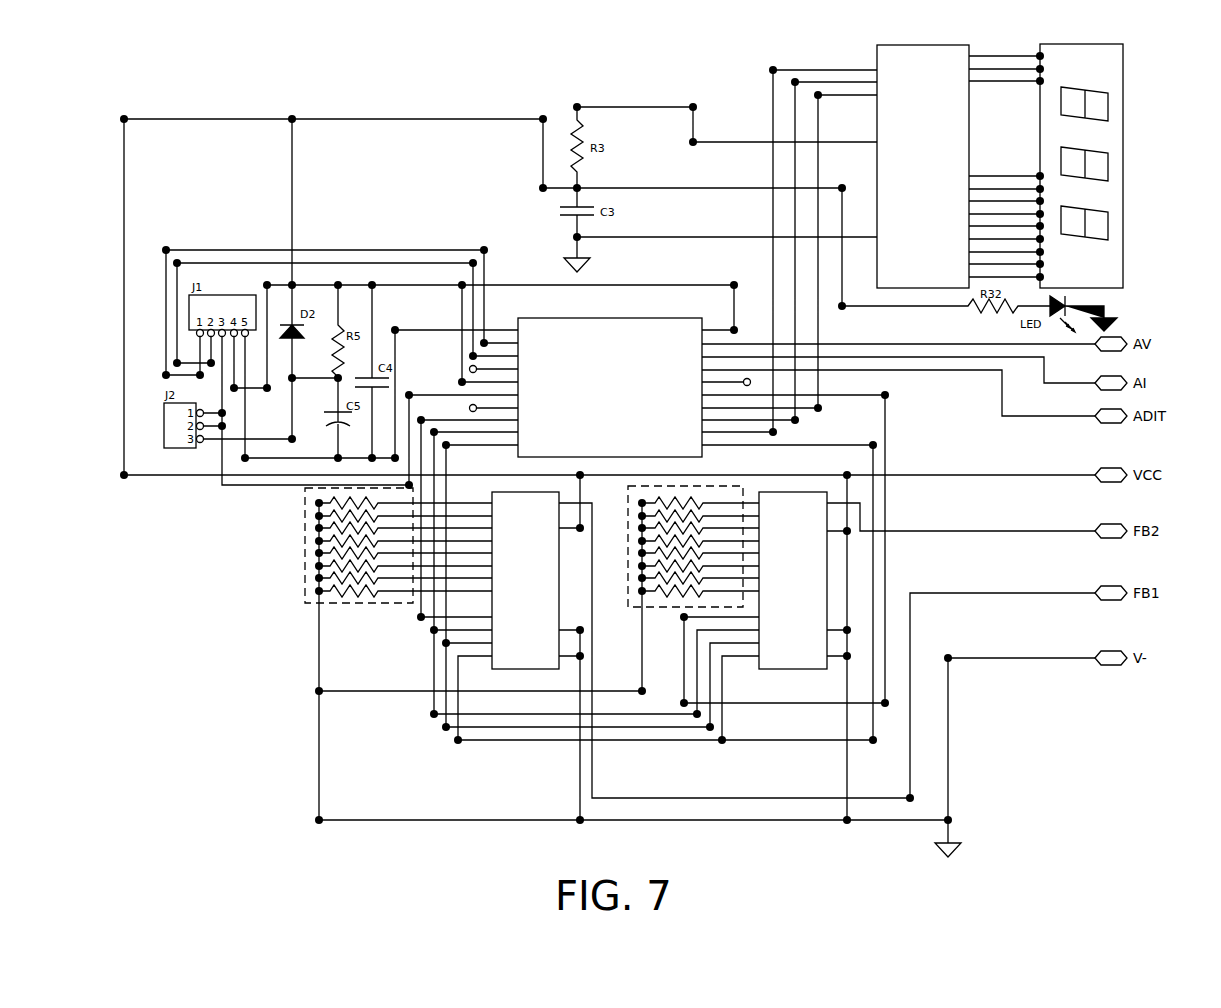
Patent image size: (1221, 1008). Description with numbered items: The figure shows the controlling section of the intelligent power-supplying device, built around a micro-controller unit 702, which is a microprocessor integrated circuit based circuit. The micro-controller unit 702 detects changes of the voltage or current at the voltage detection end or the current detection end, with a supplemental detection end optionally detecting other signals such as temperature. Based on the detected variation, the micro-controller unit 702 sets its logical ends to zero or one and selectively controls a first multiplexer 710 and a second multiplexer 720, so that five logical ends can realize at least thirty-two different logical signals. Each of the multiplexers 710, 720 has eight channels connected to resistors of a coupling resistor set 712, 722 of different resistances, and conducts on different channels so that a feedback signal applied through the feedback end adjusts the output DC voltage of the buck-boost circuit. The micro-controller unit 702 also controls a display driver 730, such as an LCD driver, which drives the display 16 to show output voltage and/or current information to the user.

The display driver 730 is at (877, 52).
The display 16 is at (1124, 73).
The micro-controller unit 702 is at (557, 318).
The coupling resistor set 712 is at (305, 565).
The first multiplexer 710 is at (525, 669).
The coupling resistor set 722 is at (667, 607).
The second multiplexer 720 is at (792, 670).